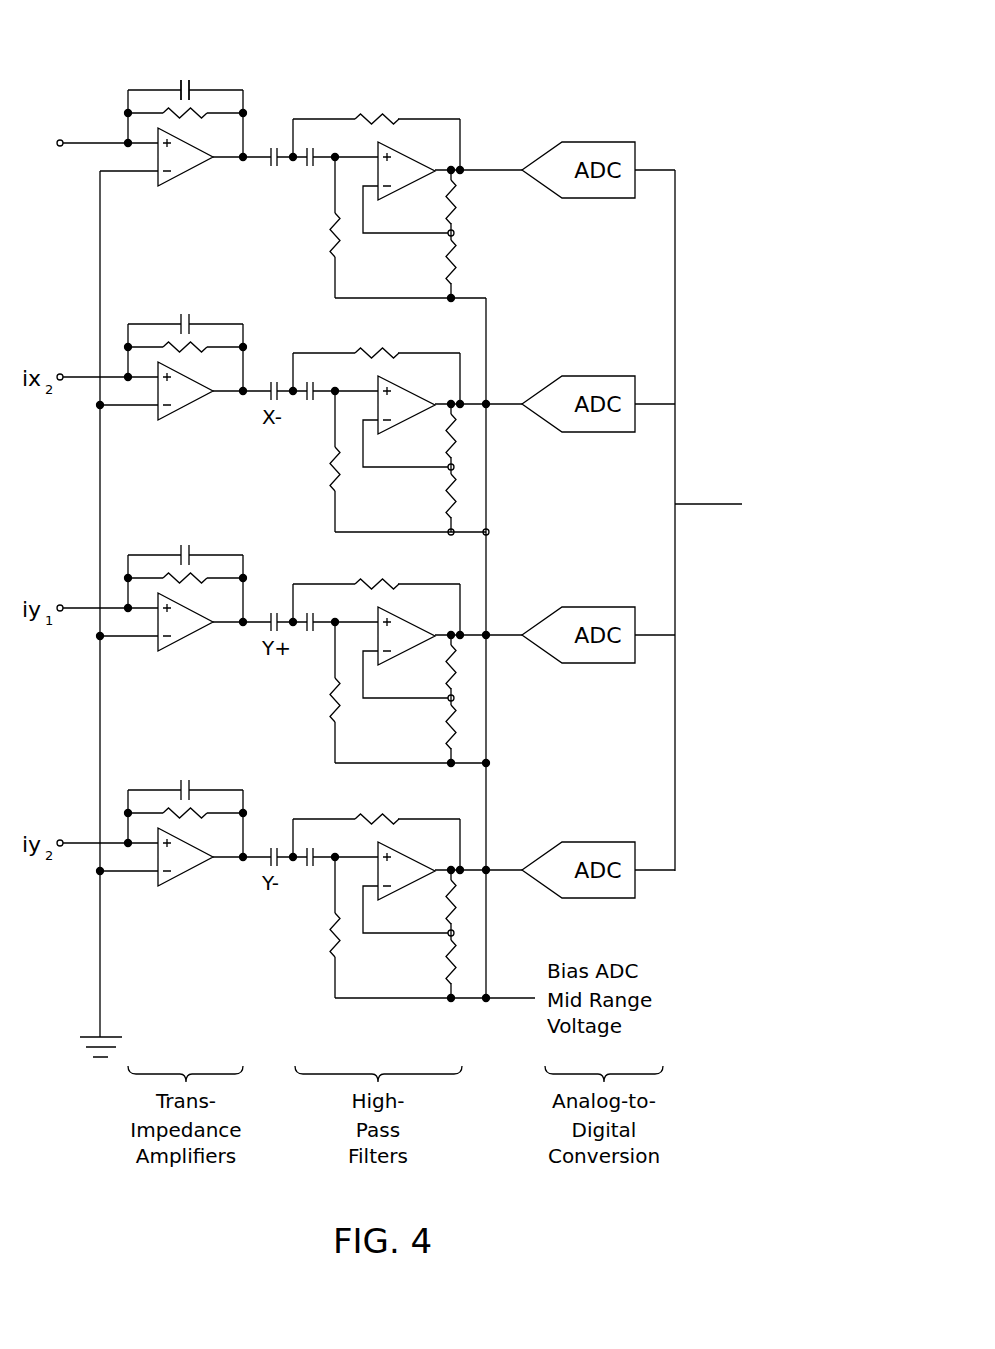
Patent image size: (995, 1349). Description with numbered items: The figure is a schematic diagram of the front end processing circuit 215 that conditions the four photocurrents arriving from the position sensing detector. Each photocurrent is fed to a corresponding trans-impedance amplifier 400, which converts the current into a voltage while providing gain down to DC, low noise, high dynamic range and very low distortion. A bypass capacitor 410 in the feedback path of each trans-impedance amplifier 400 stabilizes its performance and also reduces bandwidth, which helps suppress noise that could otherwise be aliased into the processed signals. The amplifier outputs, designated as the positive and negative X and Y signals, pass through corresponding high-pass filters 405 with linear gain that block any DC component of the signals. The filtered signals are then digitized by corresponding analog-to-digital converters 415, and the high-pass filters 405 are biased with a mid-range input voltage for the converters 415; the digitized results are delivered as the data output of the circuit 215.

The trans-impedance amplifier 400 is at (185, 73).
The bypass capacitor 410 is at (190, 80).
The high-pass filter 405 is at (380, 103).
The analog-to-digital converter 415 is at (593, 132).
The front end processing circuit 215 is at (698, 96).